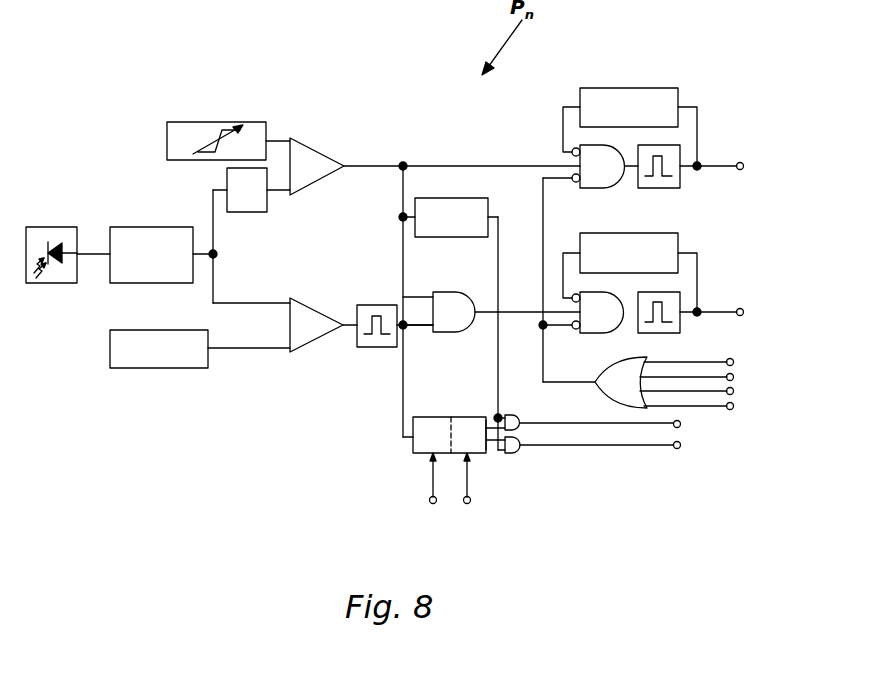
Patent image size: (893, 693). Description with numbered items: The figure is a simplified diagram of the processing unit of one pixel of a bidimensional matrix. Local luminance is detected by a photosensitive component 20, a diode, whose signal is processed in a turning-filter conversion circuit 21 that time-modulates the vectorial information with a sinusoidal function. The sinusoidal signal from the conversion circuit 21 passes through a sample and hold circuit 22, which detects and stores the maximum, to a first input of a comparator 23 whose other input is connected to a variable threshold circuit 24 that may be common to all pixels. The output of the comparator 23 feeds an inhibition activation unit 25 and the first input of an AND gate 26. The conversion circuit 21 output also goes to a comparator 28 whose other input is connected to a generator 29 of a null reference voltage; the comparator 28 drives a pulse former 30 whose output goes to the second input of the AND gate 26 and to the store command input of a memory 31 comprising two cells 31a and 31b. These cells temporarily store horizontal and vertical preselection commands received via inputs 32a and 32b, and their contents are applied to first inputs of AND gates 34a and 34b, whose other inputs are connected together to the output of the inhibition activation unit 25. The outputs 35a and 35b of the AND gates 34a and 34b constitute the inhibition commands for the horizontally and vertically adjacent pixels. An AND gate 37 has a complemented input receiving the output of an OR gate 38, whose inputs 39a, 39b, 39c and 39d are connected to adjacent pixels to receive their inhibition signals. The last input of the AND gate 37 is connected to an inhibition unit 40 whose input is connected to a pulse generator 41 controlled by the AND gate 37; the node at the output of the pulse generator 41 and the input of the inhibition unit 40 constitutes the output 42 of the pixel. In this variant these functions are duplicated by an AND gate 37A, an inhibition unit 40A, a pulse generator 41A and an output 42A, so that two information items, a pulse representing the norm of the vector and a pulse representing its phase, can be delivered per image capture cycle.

The photosensitive component 20 is at (56, 284).
The conversion circuit 21 is at (165, 227).
The sample and hold circuit 22 is at (247, 213).
The comparator 23 is at (322, 150).
The variable threshold circuit 24 is at (255, 128).
The inhibition activation unit 25 is at (440, 205).
The AND gate 26 is at (442, 292).
The comparator 28 is at (310, 338).
The generator of a null reference voltage 29 is at (178, 368).
The pulse former 30 is at (375, 348).
The memory 31 is at (412, 460).
The memory cell 31a is at (428, 437).
The memory cell 31b is at (478, 447).
The input 32a is at (432, 504).
The input 32b is at (468, 504).
The AND gate 34a is at (514, 413).
The AND gate 34b is at (517, 455).
The output 35a is at (681, 426).
The output 35b is at (681, 447).
The AND gate 37 is at (598, 188).
The AND gate 37A is at (578, 305).
The OR gate 38 is at (604, 375).
The input 39a is at (733, 360).
The input 39b is at (734, 377).
The input 39c is at (734, 392).
The input 39d is at (733, 409).
The inhibition unit 40 is at (622, 92).
The inhibition unit 40A is at (616, 237).
The pulse generator 41 is at (672, 150).
The pulse generator 41A is at (672, 300).
The output of the pixel 42 is at (744, 165).
The output of the pixel 42A is at (744, 312).